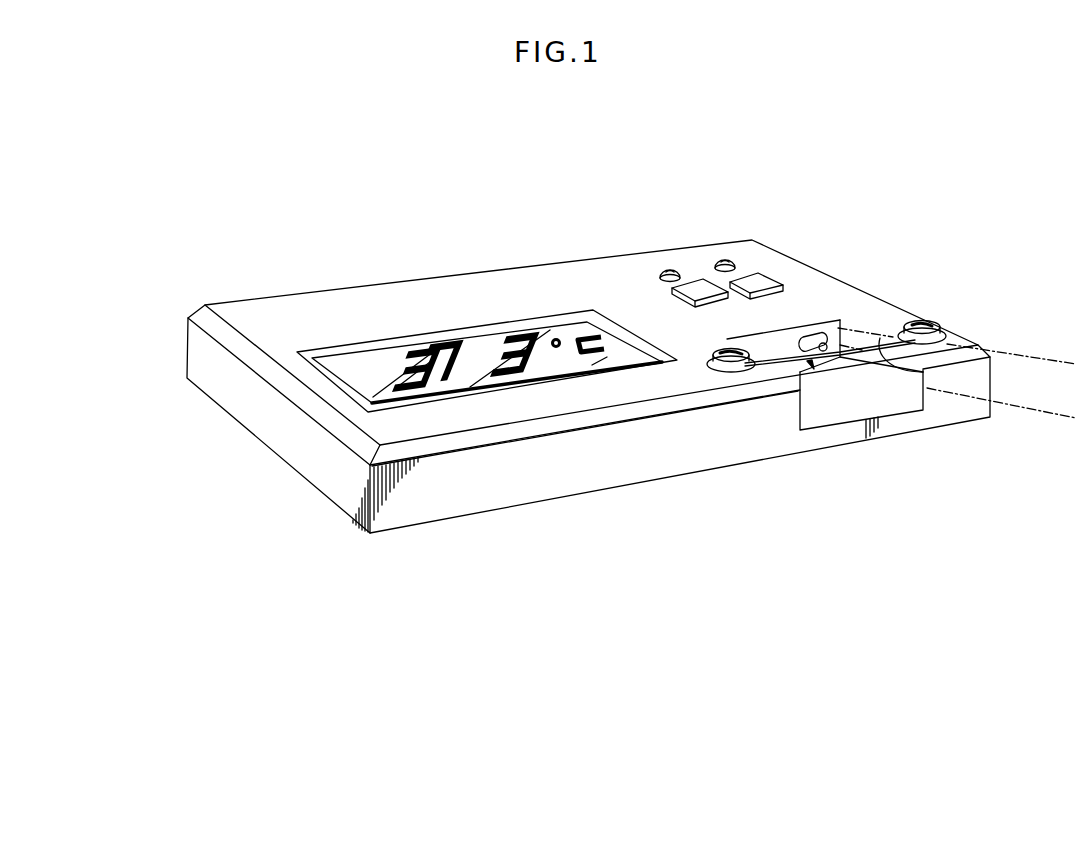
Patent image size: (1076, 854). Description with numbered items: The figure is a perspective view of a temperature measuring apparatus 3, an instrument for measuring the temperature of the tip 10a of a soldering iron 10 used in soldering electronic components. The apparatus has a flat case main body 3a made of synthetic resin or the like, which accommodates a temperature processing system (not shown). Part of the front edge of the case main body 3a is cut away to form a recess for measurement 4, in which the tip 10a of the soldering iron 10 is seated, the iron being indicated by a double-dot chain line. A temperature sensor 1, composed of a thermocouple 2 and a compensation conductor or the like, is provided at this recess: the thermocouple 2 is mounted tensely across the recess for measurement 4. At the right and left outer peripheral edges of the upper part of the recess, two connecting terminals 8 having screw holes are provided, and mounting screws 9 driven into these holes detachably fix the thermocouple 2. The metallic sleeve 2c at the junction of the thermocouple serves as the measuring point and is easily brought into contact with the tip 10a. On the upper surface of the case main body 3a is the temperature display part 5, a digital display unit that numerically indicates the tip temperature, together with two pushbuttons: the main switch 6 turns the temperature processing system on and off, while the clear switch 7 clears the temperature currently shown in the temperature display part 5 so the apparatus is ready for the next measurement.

The temperature sensor 1 is at (793, 330).
The thermocouple 2 is at (810, 365).
The metallic sleeve 2c is at (800, 333).
The temperature measuring apparatus 3 is at (285, 295).
The case main body 3a is at (517, 506).
The recess for measurement 4 is at (892, 402).
The temperature display part 5 is at (460, 342).
The main switch 6 is at (758, 275).
The clear switch 7 is at (690, 290).
The connecting terminal 8 is at (727, 373).
The mounting screw 9 is at (743, 362).
The soldering iron 10 is at (1043, 417).
The tip 10a is at (850, 330).